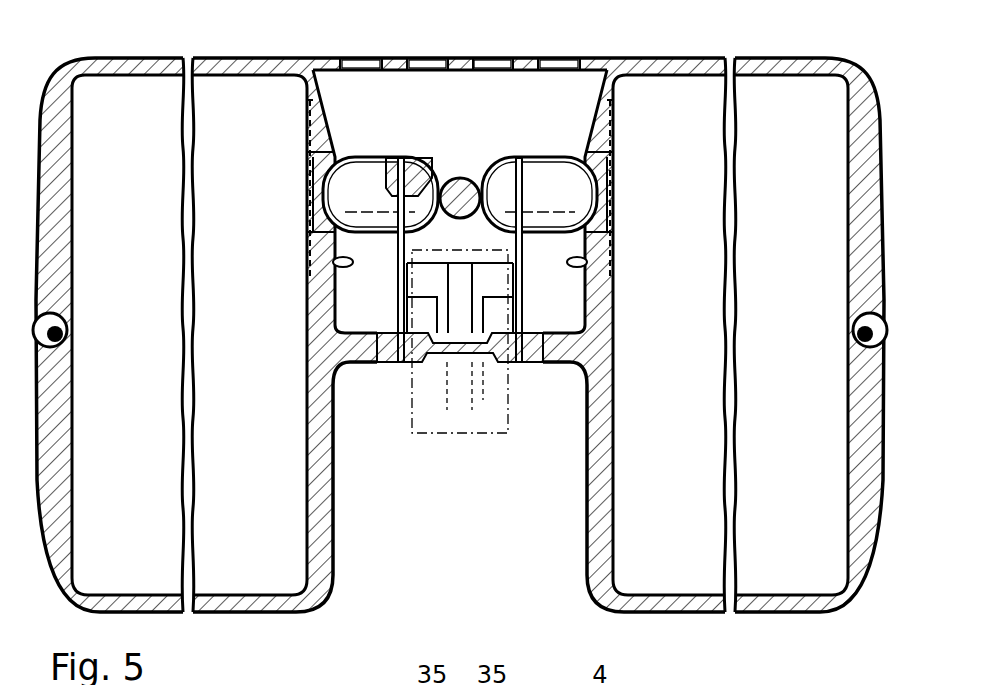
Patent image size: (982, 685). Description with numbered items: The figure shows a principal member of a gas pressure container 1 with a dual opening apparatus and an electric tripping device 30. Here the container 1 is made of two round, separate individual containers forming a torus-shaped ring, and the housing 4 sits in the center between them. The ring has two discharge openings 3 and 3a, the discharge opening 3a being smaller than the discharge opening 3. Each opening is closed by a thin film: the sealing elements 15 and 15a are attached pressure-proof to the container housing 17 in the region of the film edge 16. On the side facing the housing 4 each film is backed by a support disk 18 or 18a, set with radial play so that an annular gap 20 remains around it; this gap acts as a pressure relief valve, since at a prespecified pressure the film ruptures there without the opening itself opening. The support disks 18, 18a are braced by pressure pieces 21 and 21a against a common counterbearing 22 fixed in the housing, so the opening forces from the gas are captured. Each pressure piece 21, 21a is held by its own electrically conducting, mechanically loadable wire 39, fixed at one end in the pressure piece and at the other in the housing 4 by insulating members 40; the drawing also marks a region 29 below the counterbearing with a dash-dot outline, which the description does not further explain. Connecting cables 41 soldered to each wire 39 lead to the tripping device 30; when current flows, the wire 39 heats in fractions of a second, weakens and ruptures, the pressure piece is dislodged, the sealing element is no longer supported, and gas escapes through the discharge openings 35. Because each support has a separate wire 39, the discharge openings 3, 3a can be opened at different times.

The pressure container 1 is at (119, 482).
The discharge opening 3 is at (296, 228).
The discharge opening 3a is at (623, 230).
The housing 4 is at (463, 85).
The sealing element 15 is at (320, 190).
The sealing element 15a is at (600, 192).
The film edge 16 is at (305, 124).
The container housing 17 is at (592, 512).
The support disk 18 is at (325, 160).
The support disk 18a is at (595, 162).
The annular gap 20 is at (345, 262).
The pressure piece 21 is at (353, 178).
The pressure piece 21a is at (548, 175).
The counterbearing 22 is at (466, 187).
The guide region 29 is at (411, 434).
The tripping device 30 is at (494, 392).
The discharge openings 35 is at (422, 58).
The wire 39 is at (400, 290).
The insulating member 40 is at (410, 172).
The connecting cables 41 is at (447, 420).